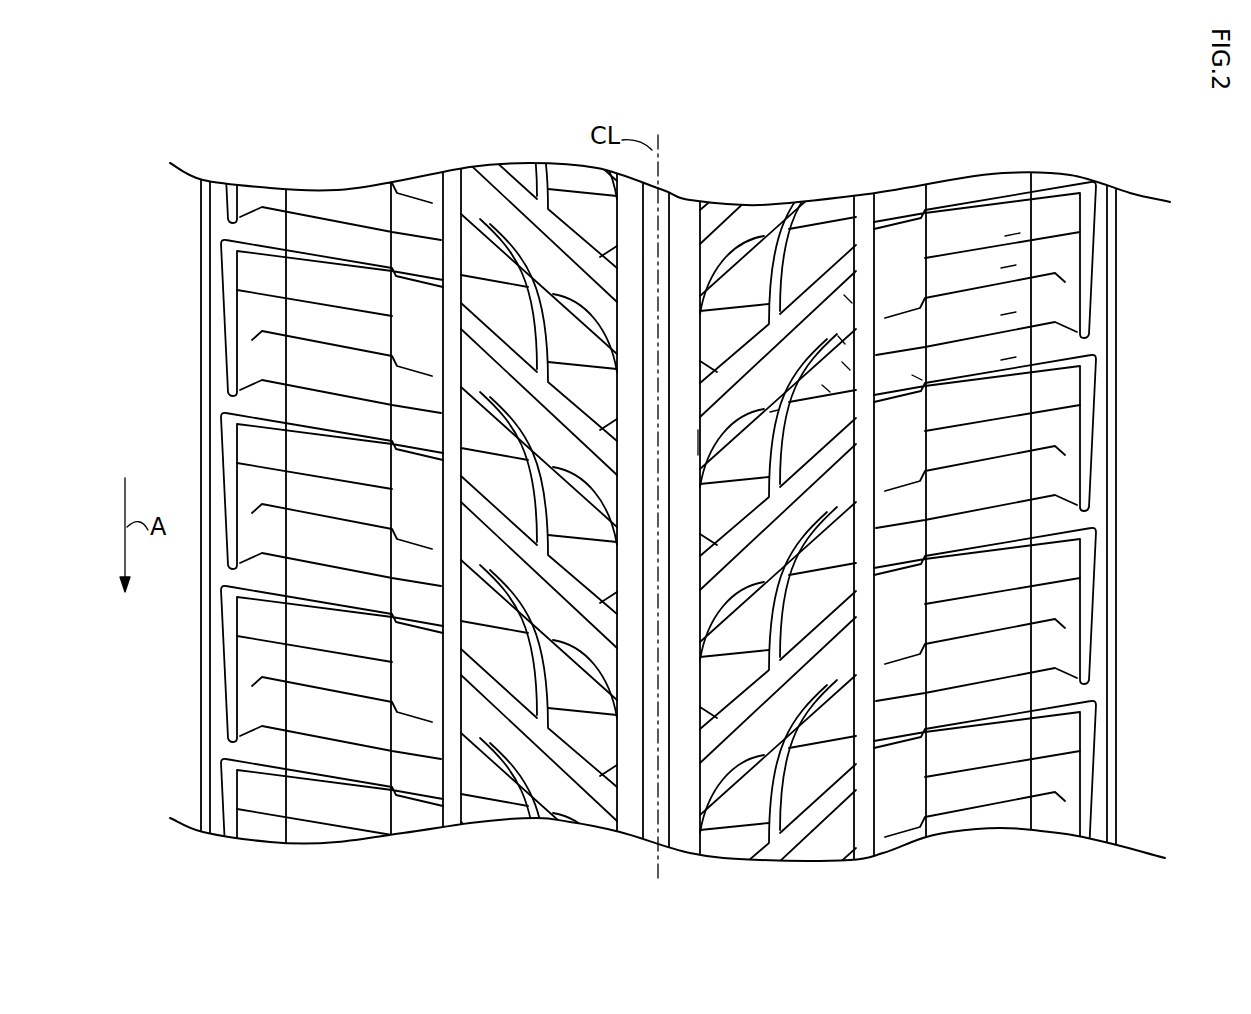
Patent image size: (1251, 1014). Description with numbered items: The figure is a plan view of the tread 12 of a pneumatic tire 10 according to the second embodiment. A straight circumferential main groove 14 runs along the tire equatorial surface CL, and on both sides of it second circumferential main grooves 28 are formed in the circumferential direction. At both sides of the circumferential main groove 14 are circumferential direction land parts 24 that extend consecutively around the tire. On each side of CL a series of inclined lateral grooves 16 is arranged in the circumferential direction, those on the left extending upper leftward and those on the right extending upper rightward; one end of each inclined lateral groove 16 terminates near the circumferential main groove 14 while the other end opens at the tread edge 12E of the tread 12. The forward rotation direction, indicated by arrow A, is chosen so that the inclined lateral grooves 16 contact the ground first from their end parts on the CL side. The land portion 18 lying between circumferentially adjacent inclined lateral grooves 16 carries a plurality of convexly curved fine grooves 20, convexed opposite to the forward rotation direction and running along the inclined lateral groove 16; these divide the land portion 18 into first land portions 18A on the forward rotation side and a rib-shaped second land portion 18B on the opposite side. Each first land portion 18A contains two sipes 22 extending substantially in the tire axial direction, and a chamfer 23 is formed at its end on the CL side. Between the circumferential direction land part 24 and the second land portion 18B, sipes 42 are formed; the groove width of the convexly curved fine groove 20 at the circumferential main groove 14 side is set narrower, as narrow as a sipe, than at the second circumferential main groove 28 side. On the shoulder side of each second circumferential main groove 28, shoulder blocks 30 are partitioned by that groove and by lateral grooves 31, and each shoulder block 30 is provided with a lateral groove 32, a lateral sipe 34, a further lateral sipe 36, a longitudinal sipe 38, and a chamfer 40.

The pneumatic tire 10 is at (968, 104).
The tread 12 is at (763, 206).
The tread edge 12E is at (283, 797).
The circumferential main groove 14 is at (664, 205).
The inclined lateral groove 16 is at (776, 347).
The land portion 18 is at (838, 310).
The first land portion 18A is at (848, 365).
The second land portion 18B is at (850, 298).
The convexly curved fine groove 20 is at (838, 340).
The sipe 22 is at (826, 389).
The chamfer 23 is at (775, 409).
The circumferential direction land part 24 is at (630, 822).
The second circumferential main groove 28 is at (450, 212).
The shoulder block 30 is at (412, 222).
The lateral groove 31 is at (1006, 360).
The lateral groove 32 is at (1006, 268).
The lateral sipe 34 is at (1010, 236).
The lateral sipe 36 is at (1006, 315).
The longitudinal sipe 38 is at (935, 235).
The chamfer 40 is at (915, 380).
The sipe 42 is at (700, 443).